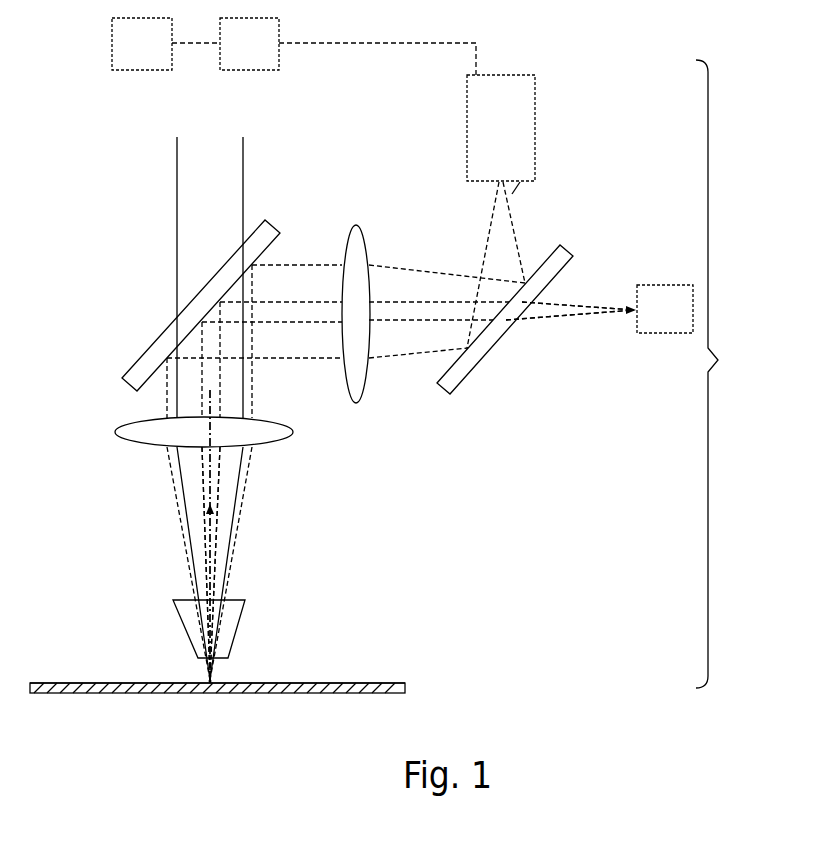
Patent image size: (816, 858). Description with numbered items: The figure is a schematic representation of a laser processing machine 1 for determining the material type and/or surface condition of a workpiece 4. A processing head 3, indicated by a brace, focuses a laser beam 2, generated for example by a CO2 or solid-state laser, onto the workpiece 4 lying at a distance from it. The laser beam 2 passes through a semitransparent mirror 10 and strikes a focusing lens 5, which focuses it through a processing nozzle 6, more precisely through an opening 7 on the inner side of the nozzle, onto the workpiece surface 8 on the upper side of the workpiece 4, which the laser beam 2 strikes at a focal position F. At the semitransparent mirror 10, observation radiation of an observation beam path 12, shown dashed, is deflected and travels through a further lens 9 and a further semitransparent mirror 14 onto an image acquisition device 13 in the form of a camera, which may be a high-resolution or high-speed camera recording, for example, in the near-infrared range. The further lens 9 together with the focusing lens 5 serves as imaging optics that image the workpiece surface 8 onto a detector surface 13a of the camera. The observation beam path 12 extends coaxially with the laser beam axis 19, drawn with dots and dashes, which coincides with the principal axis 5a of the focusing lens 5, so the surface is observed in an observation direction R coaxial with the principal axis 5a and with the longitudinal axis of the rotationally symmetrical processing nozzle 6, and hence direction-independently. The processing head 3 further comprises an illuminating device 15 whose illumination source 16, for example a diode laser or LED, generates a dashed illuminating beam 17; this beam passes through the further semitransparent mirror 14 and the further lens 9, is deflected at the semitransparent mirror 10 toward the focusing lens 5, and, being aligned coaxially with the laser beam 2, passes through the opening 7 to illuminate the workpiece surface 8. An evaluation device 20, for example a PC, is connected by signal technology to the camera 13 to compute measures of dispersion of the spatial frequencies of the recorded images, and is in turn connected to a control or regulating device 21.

The laser processing machine 1 is at (100, 250).
The laser beam 2 is at (200, 186).
The processing head 3 is at (717, 374).
The workpiece 4 is at (118, 694).
The focusing lens 5 is at (148, 434).
The principal axis of the focusing lens 5a is at (279, 536).
The processing nozzle 6 is at (178, 622).
The opening 7 is at (198, 594).
The workpiece surface 8 is at (80, 683).
The further lens 9 is at (352, 372).
The semitransparent mirror 10 is at (157, 353).
The observation beam path 12 is at (482, 255).
The image acquisition device 13 is at (506, 90).
The detector surface 13a is at (522, 182).
The further semitransparent mirror 14 is at (472, 362).
The illuminating device 15 is at (645, 250).
The illumination source 16 is at (661, 334).
The illuminating beam 17 is at (560, 318).
The laser beam axis 19 is at (211, 479).
The observation direction R is at (208, 534).
The focal position F is at (206, 681).
The evaluation device 20 is at (266, 40).
The control or regulating device 21 is at (130, 49).